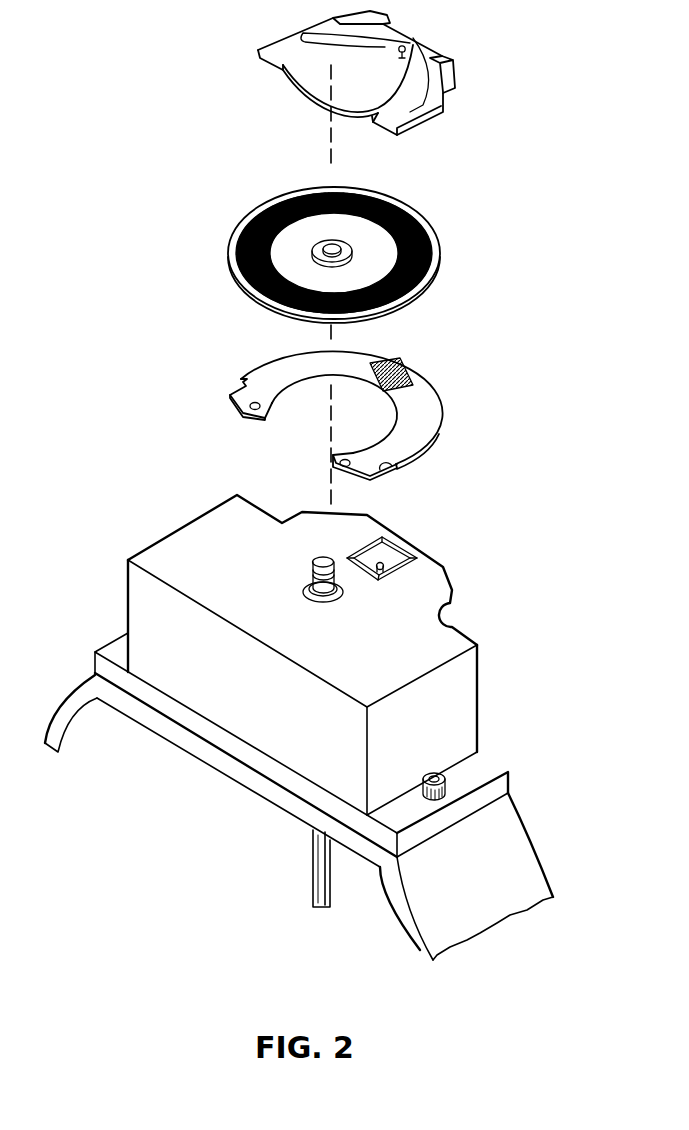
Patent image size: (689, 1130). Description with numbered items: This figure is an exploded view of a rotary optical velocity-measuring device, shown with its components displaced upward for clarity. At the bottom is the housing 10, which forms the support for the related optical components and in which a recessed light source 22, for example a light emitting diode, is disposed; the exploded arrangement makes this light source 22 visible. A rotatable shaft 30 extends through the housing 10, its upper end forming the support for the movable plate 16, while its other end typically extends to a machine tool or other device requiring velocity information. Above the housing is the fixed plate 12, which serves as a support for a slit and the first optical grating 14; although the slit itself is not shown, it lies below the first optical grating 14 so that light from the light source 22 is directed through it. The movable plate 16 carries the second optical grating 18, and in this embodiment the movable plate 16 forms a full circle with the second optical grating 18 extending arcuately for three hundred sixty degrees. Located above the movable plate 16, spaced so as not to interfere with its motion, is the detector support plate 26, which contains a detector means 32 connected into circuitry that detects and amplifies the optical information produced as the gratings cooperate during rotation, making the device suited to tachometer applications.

The housing 10 is at (479, 662).
The fixed plate 12 is at (266, 365).
The first optical grating 14 is at (406, 366).
The movable plate 16 is at (248, 215).
The second optical grating 18 is at (410, 211).
The light source 22 is at (383, 565).
The detector support plate 26 is at (437, 52).
The rotatable shaft 30 is at (313, 860).
The detector means 32 is at (407, 46).